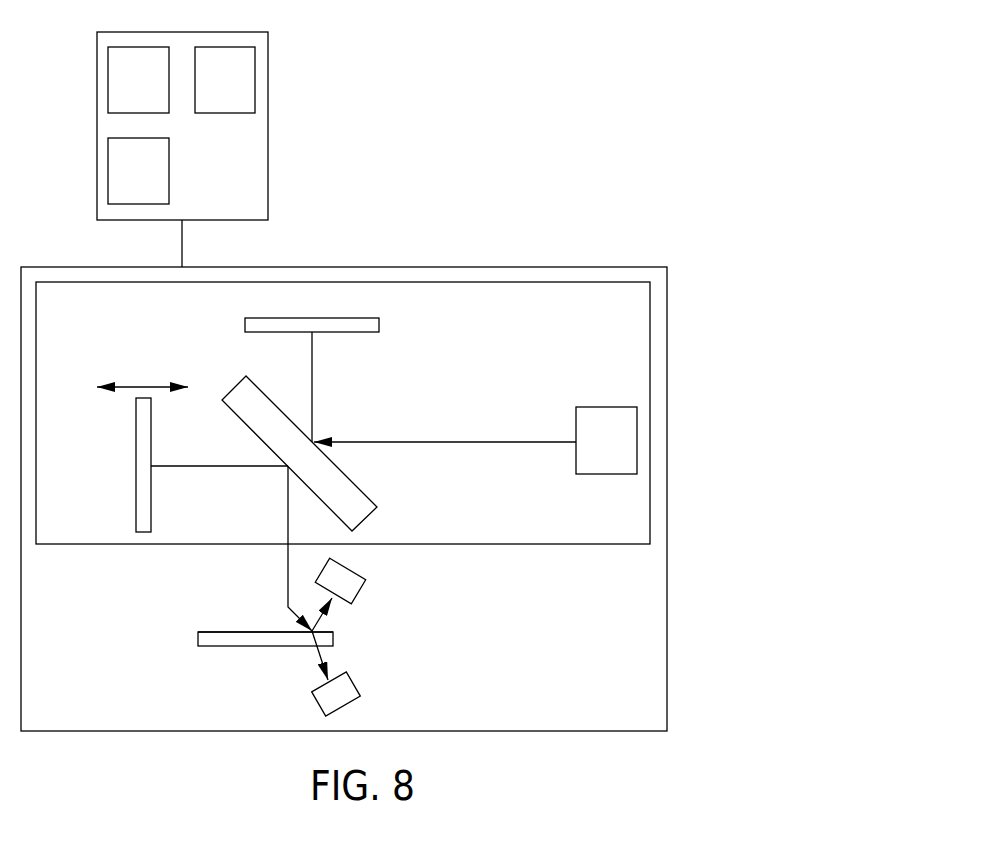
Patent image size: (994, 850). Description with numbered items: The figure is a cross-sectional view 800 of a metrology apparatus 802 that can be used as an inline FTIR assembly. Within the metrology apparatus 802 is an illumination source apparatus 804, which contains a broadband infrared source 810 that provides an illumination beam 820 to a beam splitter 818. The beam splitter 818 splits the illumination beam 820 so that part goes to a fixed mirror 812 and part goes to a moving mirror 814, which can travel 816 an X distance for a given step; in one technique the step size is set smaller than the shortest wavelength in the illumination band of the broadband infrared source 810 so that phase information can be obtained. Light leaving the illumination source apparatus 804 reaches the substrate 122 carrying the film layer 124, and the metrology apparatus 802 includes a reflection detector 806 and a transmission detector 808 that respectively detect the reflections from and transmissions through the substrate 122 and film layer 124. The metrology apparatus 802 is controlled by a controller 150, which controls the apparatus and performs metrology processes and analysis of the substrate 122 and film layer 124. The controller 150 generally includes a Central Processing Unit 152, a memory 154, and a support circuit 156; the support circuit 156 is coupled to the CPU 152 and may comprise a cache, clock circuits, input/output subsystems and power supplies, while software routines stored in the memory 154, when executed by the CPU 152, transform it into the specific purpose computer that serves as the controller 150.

The controller 150 is at (240, 185).
The Central Processing Unit (CPU) 152 is at (155, 90).
The memory 154 is at (241, 90).
The support circuit 156 is at (155, 185).
The view 800 is at (616, 213).
The metrology apparatus 802 is at (80, 711).
The illumination source apparatus 804 is at (623, 529).
The reflection detector 806 is at (351, 591).
The transmission detector 808 is at (360, 680).
The broadband infrared source 810 is at (625, 452).
The fixed mirror 812 is at (380, 325).
The moving mirror 814 is at (135, 435).
The travel 816 is at (144, 385).
The beam splitter 818 is at (234, 388).
The illumination beam 820 is at (442, 440).
The substrate 122 is at (252, 649).
The film layer 124 is at (213, 630).